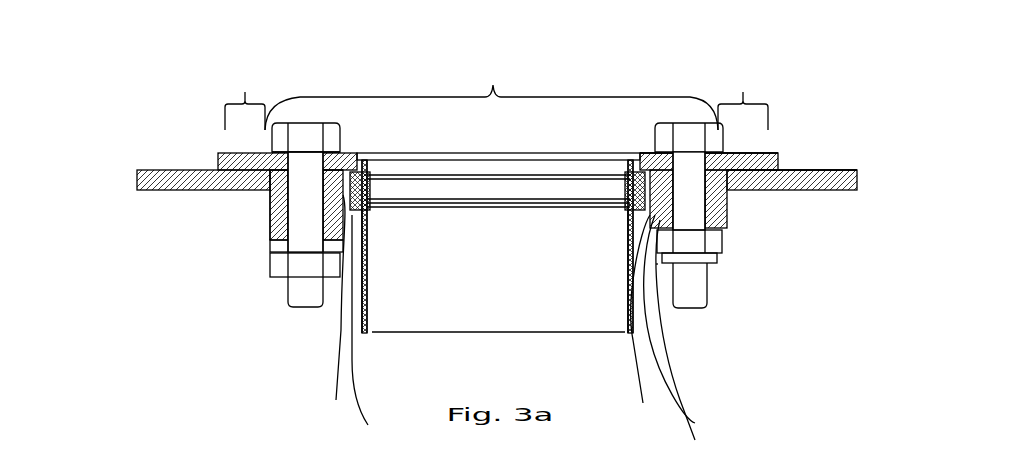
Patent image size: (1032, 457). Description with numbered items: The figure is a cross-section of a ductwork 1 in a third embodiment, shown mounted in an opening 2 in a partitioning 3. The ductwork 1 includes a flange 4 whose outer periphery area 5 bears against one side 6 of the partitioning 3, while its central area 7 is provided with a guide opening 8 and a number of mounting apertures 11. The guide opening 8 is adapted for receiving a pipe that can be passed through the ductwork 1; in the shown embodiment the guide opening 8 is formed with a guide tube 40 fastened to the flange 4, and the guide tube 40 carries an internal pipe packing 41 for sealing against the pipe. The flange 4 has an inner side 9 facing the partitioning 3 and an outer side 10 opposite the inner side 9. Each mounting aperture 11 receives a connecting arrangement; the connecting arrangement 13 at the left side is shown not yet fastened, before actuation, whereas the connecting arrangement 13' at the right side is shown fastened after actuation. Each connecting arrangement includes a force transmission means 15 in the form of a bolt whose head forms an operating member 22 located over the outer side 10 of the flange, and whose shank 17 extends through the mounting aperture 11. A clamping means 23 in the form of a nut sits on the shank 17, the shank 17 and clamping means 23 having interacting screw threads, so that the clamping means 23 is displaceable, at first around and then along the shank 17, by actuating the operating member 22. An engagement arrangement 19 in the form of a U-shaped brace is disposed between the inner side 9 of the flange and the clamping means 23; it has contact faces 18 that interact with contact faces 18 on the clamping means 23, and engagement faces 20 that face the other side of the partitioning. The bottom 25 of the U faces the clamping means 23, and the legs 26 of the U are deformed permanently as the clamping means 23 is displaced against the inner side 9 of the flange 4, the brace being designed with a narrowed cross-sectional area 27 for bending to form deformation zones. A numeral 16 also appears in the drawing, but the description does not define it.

The ductwork 1 is at (757, 428).
The opening 2 is at (428, 288).
The partitioning 3 is at (131, 180).
The flange 4 is at (212, 145).
The outer periphery area 5 is at (496, 91).
The side of the partitioning 6 is at (842, 166).
The central area 7 is at (491, 92).
The guide opening 8 is at (569, 270).
The inner side 9 is at (782, 174).
The outer side 10 is at (781, 148).
The mounting aperture 11 is at (281, 170).
The connecting arrangement 13 is at (563, 290).
The connecting arrangement 13' is at (761, 260).
The force transmission means 15 is at (500, 304).
The third plate 16 is at (851, 195).
The shank 17 is at (298, 230).
The contact faces 18 is at (677, 336).
The engagement arrangement 19 is at (251, 257).
The engagement faces 20 is at (770, 149).
The operating member 22 is at (278, 134).
The clamping means 23 is at (300, 267).
The bottom of the U 25 is at (258, 222).
The legs of the U 26 is at (262, 225).
The narrowed cross-sectional area 27 is at (270, 220).
The guide tube 40 is at (372, 281).
The pipe packing 41 is at (623, 195).